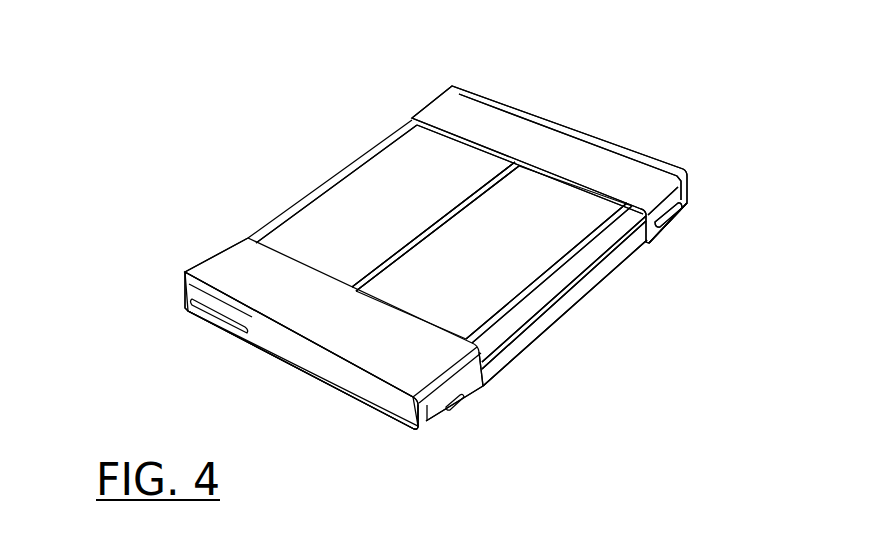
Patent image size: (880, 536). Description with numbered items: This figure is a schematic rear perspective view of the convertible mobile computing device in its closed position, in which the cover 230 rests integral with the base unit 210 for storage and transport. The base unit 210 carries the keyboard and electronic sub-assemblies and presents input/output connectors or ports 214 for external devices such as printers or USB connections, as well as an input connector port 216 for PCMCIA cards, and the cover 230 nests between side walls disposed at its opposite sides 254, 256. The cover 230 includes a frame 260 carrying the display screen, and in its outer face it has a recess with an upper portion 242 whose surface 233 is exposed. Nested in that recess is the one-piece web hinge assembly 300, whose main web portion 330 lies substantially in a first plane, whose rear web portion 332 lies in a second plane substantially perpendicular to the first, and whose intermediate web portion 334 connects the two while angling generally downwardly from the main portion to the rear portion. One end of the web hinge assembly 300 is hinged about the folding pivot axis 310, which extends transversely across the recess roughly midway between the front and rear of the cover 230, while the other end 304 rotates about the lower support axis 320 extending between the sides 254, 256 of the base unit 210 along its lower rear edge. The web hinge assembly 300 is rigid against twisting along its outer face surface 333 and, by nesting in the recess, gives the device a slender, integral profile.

The upper portion of the recess 242 is at (368, 112).
The folding pivot axis 310 is at (515, 163).
The main web portion 330 is at (556, 212).
The web hinge assembly 300 is at (500, 202).
The side of the base unit 254 is at (691, 196).
The lower support axis 320 is at (722, 223).
The input/output connectors or ports 214 is at (666, 219).
The rear web portion 332 is at (598, 272).
The intermediate web portion 334 is at (542, 287).
The other end of the web hinge assembly 304 is at (546, 333).
The cover 230 is at (250, 250).
The surface of the upper portion of the recess 233 is at (376, 207).
The outer face surface 333 is at (480, 263).
The input connector port 216 is at (207, 314).
The base unit 210 is at (310, 366).
The side of the base unit 256 is at (403, 430).
The frame 260 is at (488, 390).